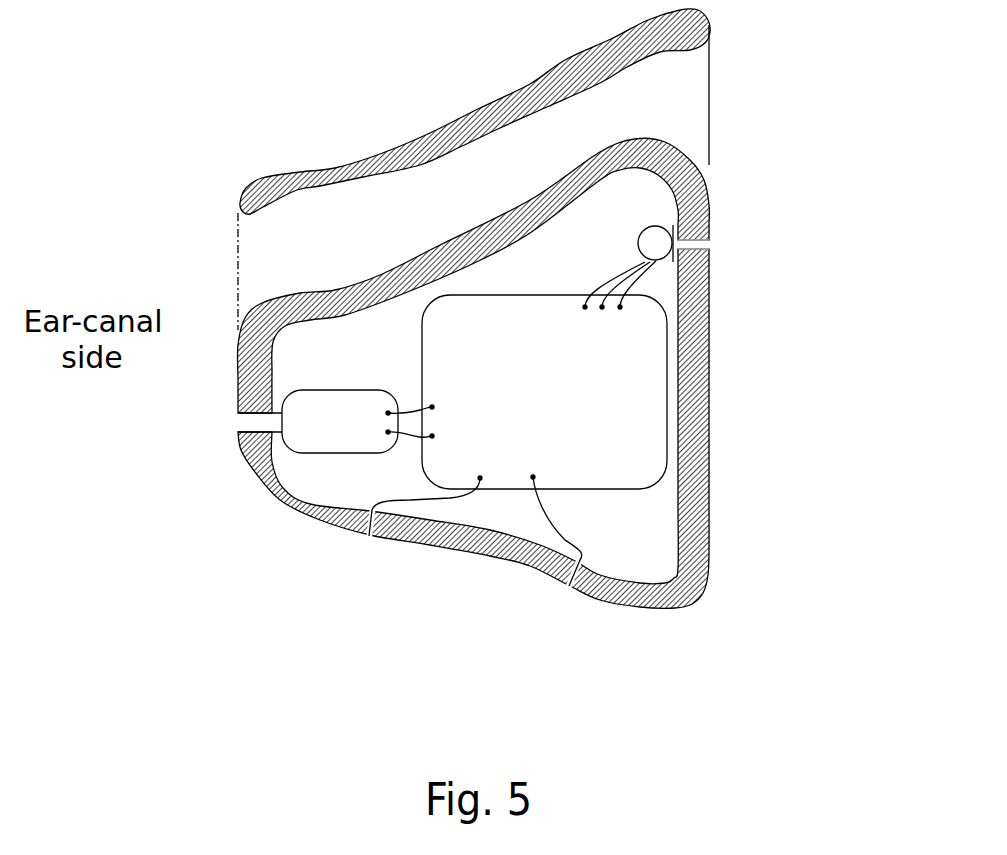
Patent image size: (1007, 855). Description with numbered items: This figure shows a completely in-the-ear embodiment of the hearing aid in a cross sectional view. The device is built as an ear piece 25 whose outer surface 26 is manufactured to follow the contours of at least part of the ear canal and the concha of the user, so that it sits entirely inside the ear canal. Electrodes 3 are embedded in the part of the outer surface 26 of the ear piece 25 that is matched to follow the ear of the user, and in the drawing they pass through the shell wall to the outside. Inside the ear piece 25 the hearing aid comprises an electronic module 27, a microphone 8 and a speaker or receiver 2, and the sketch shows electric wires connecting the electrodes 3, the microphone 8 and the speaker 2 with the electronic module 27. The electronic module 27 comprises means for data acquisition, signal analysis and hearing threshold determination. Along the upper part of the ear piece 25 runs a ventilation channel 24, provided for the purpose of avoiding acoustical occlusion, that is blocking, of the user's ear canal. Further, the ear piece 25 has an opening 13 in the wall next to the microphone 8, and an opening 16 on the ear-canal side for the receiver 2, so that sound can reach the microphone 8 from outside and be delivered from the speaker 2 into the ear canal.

The speaker or receiver 2 is at (357, 421).
The electrodes 3 is at (355, 536).
The microphone 8 is at (638, 240).
The opening for the microphone 13 is at (709, 243).
The opening for the receiver 16 is at (241, 424).
The ventilation channel 24 is at (290, 247).
The ear piece 25 is at (542, 373).
The outer surface 26 is at (710, 407).
The electronic module 27 is at (544, 392).